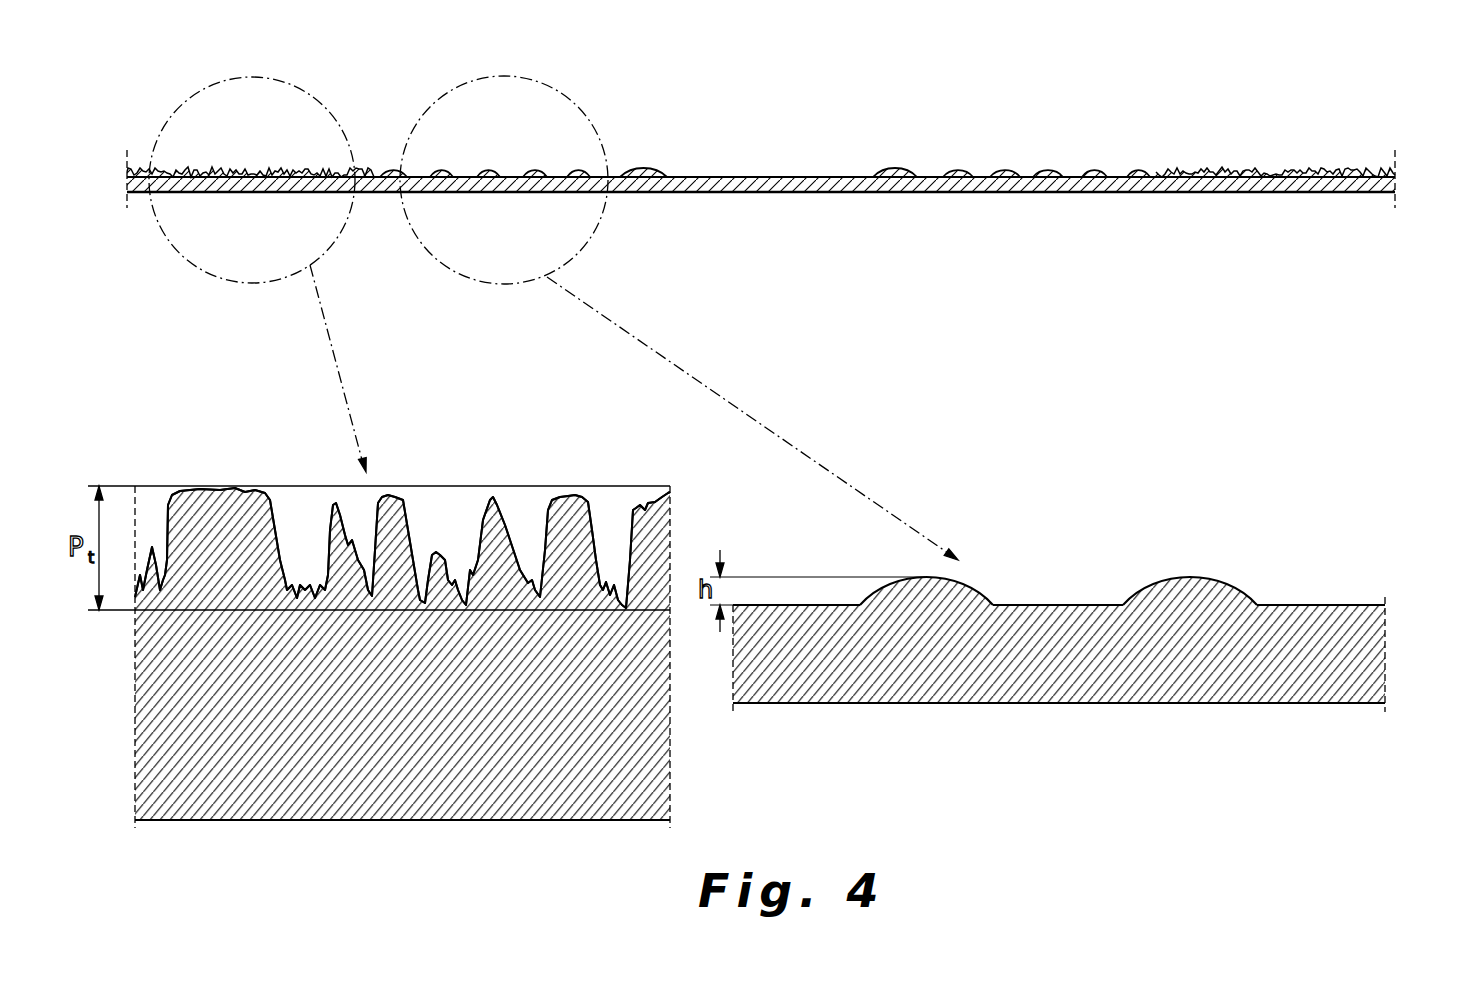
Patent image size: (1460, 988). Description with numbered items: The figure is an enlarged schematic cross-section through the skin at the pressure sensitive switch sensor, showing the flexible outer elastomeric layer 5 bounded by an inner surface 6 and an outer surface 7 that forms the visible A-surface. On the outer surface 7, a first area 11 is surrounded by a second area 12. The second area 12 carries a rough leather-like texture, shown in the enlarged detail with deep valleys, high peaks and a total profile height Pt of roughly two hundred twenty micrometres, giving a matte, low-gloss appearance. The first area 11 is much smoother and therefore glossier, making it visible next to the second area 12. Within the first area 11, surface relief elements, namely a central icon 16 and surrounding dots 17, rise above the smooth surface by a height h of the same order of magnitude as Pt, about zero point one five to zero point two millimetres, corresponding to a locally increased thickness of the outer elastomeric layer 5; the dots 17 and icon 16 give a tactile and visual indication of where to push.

The flexible outer elastomeric layer 5 is at (1395, 185).
The inner surface 6 is at (1268, 195).
The outer surface 7 is at (595, 525).
The first area 11 is at (787, 168).
The second area 12 is at (302, 157).
The central icon 16 is at (642, 172).
The dots 17 is at (483, 172).